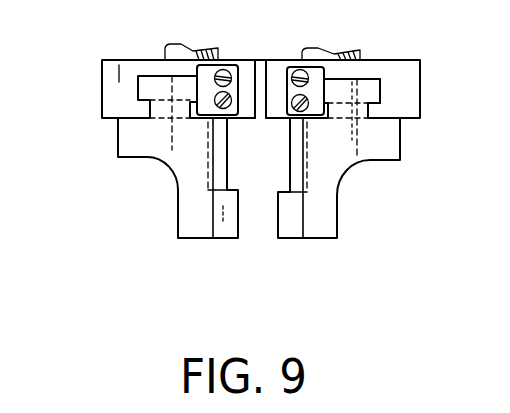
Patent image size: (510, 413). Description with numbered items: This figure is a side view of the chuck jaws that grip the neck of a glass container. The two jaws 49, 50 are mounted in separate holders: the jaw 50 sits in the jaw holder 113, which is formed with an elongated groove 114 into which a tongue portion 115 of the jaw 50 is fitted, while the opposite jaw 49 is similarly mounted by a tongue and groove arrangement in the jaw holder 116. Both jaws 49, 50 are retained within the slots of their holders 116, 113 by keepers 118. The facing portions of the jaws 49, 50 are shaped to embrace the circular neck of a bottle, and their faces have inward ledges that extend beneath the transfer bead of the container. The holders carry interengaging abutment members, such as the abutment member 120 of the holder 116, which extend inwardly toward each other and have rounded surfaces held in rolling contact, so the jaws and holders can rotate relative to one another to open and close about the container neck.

The jaw holder 113 is at (407, 98).
The elongated groove 114 is at (372, 92).
The tongue portion 115 is at (347, 88).
The jaw holder 116 is at (110, 101).
The keepers 118 is at (312, 72).
The abutment member 120 is at (261, 110).
The jaw 49 is at (180, 158).
The jaw 50 is at (365, 150).